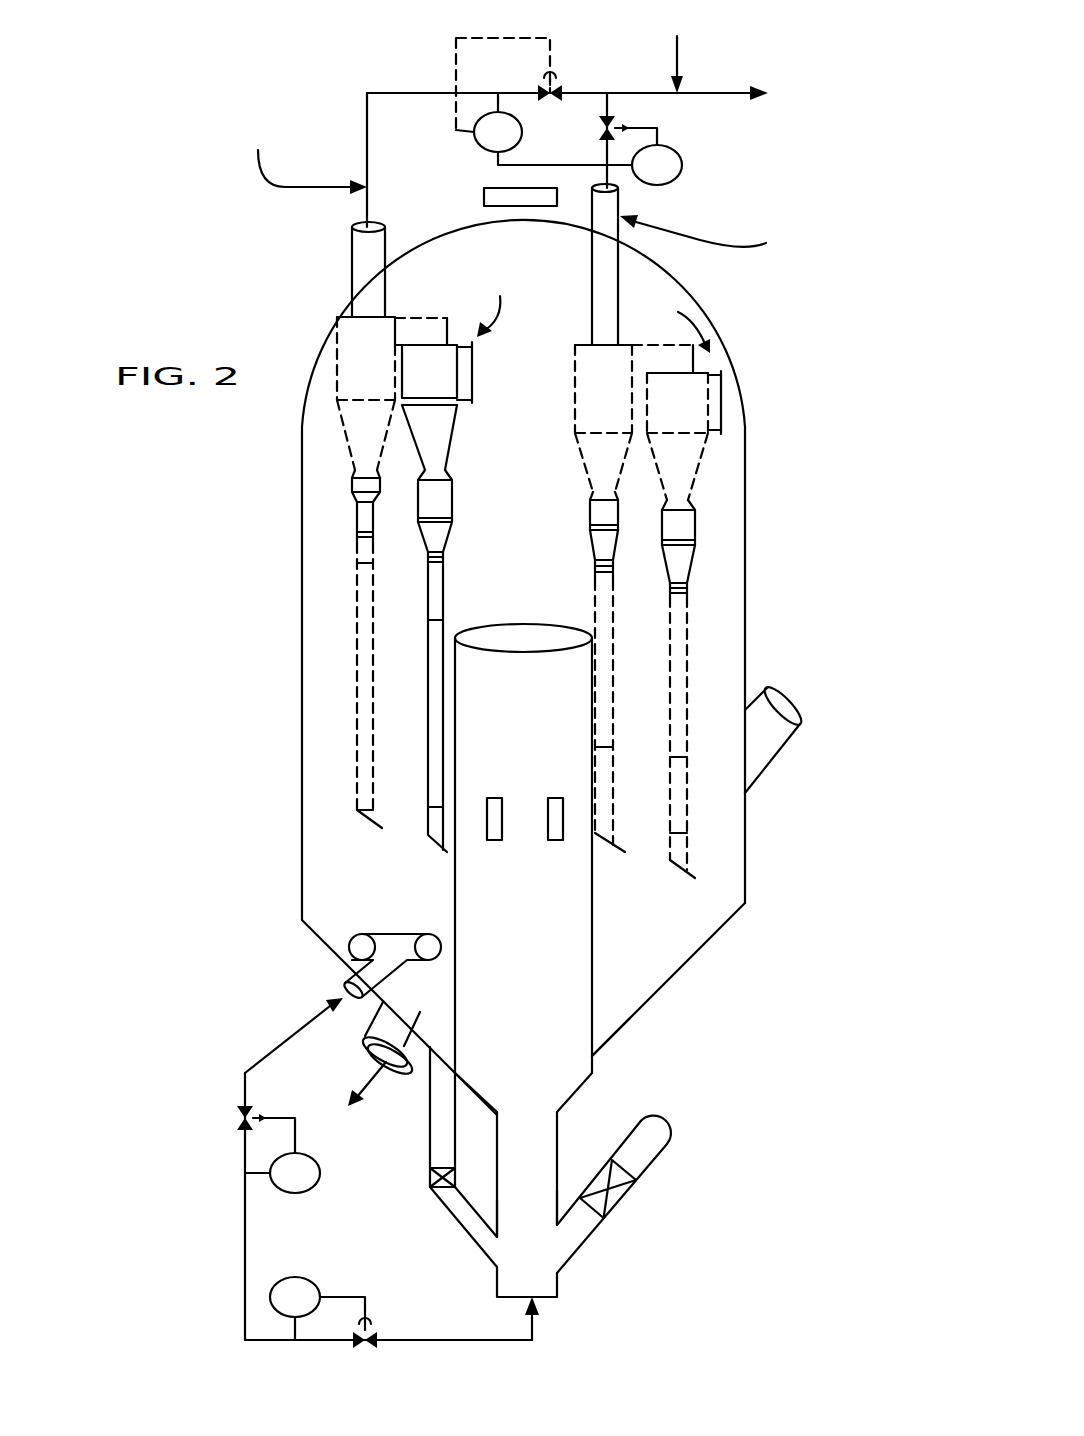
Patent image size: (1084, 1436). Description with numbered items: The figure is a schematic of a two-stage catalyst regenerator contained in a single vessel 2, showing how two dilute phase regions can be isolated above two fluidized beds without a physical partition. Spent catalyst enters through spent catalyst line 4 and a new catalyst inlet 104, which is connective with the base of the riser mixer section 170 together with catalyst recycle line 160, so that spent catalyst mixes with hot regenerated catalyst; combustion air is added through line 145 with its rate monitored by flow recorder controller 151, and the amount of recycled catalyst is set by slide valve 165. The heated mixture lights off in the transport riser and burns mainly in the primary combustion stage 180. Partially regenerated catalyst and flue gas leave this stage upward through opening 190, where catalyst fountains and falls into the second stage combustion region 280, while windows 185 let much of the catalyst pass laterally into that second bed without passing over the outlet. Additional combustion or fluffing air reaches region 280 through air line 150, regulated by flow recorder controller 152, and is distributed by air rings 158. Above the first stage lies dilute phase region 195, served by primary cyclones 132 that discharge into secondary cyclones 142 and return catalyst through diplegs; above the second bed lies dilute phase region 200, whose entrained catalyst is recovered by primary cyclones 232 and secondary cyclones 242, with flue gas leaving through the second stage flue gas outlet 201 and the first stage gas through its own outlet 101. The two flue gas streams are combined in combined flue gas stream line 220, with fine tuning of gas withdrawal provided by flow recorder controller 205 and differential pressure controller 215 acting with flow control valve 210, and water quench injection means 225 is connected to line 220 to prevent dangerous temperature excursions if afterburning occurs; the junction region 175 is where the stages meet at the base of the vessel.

The vessel 2 is at (746, 622).
The spent catalyst line 4 is at (768, 767).
The first stage cyclone riser 101 is at (352, 256).
The new catalyst inlet 104 is at (663, 1128).
The primary cyclones 132 is at (412, 431).
The secondary cyclones 142 is at (348, 431).
The combustion air line 145 is at (445, 1342).
The air line 150 is at (243, 1290).
The flow recorder controller 151 is at (288, 1277).
The flow recorder controller 152 is at (287, 1192).
The air rings 158 is at (410, 932).
The catalyst recycle line 160 is at (430, 1155).
The slide valve 165 is at (457, 1183).
The riser mixer section 170 is at (557, 1152).
The cone junction 175 is at (605, 1045).
The primary combustion stage 180 is at (547, 977).
The windows 185 is at (556, 796).
The opening 190 is at (498, 623).
The dilute phase region 195 is at (542, 380).
The dilute phase region 200 is at (352, 673).
The second stage flue gas outlet 201 is at (619, 230).
The flow recorder controller 205 is at (683, 155).
The flow control valve 210 is at (547, 79).
The differential pressure controller 215 is at (485, 148).
The combined flue gas stream line 220 is at (694, 98).
The water quench injection means 225 is at (675, 48).
The primary cyclones 232 is at (722, 480).
The secondary cyclones 242 is at (645, 477).
The second stage combustion region 280 is at (682, 920).